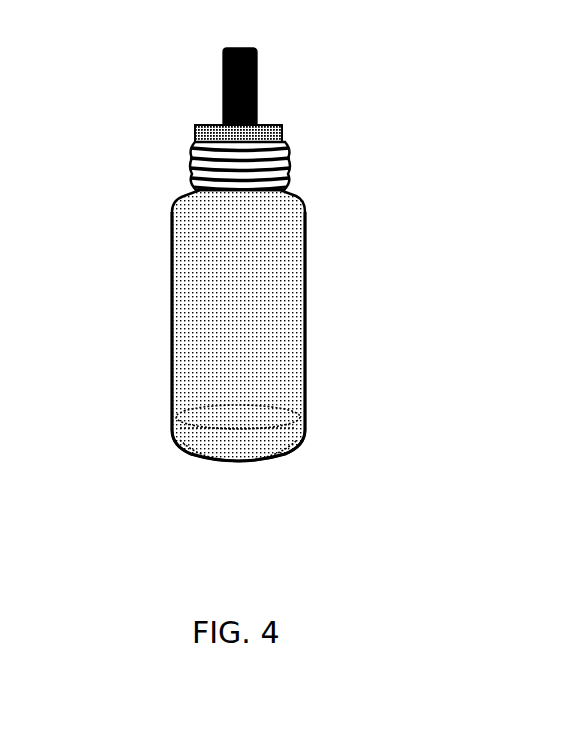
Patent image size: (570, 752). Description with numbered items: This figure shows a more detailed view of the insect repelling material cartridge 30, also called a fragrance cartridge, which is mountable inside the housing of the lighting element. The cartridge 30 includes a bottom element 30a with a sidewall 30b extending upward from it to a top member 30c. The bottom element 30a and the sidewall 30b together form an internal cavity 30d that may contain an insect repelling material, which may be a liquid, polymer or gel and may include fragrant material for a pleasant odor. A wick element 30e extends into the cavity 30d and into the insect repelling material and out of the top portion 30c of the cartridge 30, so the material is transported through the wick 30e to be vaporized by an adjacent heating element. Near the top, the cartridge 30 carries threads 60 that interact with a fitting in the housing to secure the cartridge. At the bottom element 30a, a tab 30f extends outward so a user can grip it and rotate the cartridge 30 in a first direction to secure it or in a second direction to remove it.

The insect repelling material cartridge 30 is at (387, 240).
The bottom element 30a is at (300, 438).
The sidewall 30b is at (293, 313).
The top member 30c is at (285, 156).
The internal cavity 30d is at (203, 393).
The wick element 30e is at (223, 102).
The tab 30f is at (221, 458).
The threads 60 is at (192, 177).